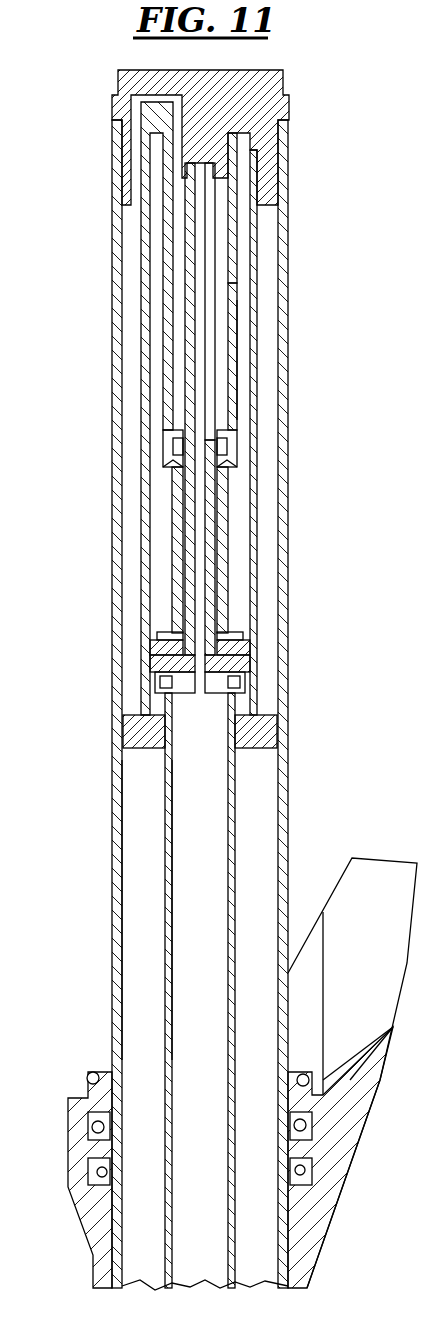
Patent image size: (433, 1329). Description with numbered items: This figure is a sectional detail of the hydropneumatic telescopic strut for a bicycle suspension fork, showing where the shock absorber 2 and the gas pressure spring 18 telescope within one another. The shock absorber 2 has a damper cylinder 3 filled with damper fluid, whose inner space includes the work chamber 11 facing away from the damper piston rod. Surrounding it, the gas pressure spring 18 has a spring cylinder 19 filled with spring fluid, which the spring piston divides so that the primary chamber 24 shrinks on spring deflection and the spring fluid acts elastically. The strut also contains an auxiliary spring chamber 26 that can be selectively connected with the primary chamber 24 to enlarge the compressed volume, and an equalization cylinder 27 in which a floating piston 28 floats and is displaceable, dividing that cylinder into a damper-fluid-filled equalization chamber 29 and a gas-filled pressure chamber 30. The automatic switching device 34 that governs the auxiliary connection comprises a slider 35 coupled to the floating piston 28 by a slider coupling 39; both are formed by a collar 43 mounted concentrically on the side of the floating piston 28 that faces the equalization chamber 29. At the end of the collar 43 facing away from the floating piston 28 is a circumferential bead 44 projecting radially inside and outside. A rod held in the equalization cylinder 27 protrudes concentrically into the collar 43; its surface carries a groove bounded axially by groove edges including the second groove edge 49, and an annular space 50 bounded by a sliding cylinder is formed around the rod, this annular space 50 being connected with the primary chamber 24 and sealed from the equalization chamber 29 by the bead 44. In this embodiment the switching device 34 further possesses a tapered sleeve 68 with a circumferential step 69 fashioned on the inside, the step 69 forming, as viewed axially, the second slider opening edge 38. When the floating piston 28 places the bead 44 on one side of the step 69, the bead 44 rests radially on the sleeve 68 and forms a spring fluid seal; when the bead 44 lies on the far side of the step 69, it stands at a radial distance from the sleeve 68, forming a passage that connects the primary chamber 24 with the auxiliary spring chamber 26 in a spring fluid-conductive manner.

The shock absorber 2 is at (148, 1095).
The damper cylinder 3 is at (167, 883).
The work chamber 11 is at (205, 851).
The gas pressure spring 18 is at (227, 704).
The spring cylinder 19 is at (112, 959).
The primary chamber 24 is at (157, 823).
The auxiliary spring chamber 26 is at (100, 550).
The pressure chamber 30 is at (165, 538).
The equalization cylinder 27 is at (257, 507).
The floating piston 28 is at (164, 630).
The equalization chamber 29 is at (237, 663).
The automatic switching device 34 is at (258, 358).
The slider 35 is at (312, 550).
The slider coupling 39 is at (312, 550).
The collar 43 is at (228, 575).
The second slider opening edge 38 is at (303, 356).
The second groove edge 49 is at (230, 385).
The circumferential bead 44 is at (232, 412).
The annular space 50 is at (156, 322).
The sleeve 68 is at (240, 283).
The circumferential step 69 is at (176, 404).